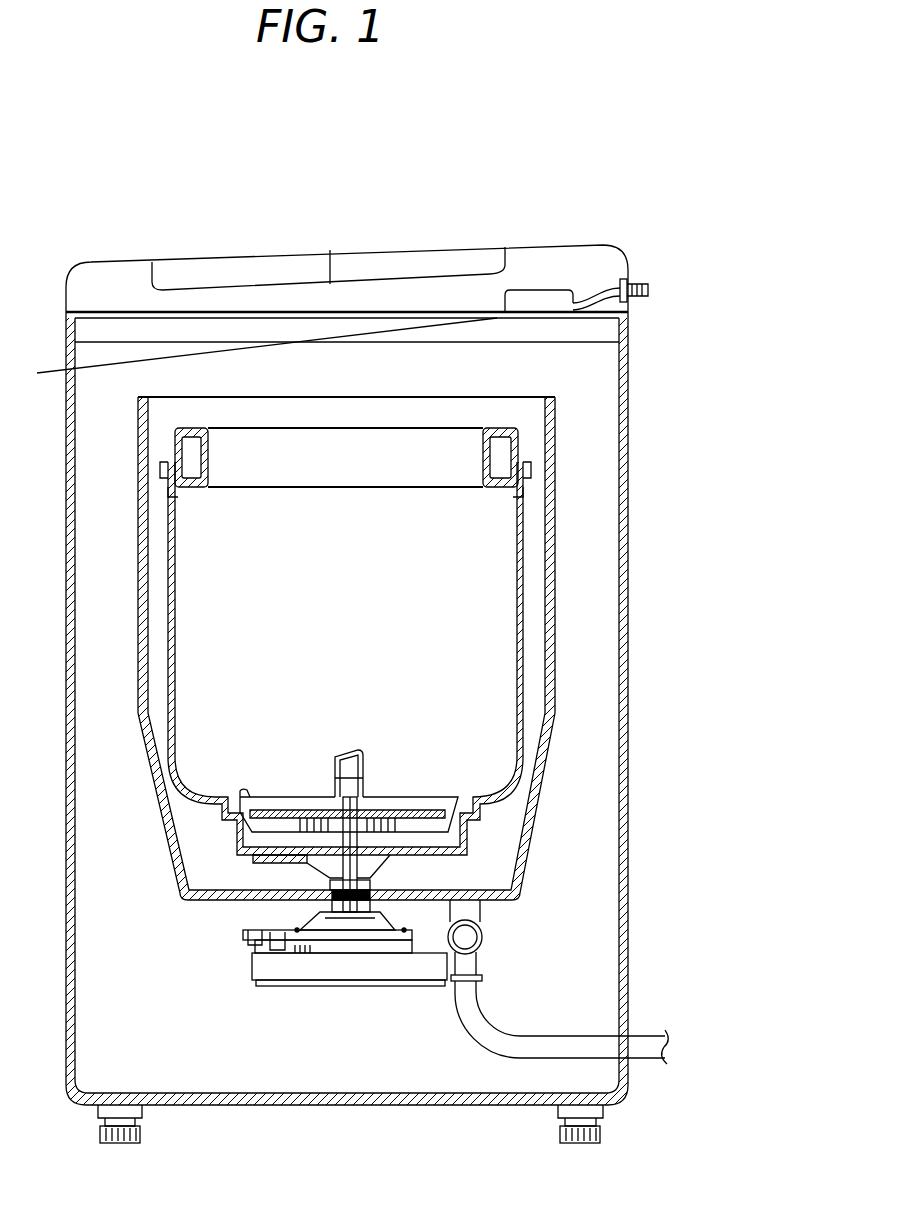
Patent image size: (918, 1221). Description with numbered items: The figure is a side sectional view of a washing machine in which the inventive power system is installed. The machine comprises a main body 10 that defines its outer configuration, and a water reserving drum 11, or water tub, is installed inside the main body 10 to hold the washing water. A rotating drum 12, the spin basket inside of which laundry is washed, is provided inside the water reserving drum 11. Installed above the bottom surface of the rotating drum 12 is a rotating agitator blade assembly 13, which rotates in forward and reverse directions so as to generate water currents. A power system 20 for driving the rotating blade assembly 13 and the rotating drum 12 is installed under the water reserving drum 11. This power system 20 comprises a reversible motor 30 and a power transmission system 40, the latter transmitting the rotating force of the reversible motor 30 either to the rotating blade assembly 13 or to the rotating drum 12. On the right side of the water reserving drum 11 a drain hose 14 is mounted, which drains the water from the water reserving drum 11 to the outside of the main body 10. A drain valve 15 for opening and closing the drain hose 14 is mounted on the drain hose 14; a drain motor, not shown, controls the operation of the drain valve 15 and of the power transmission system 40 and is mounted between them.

The main body 10 is at (628, 452).
The water reserving drum 11 is at (553, 538).
The rotating drum 12 is at (523, 660).
The rotating agitator blade assembly 13 is at (463, 805).
The drain hose 14 is at (635, 1037).
The drain valve 15 is at (482, 936).
The power system 20 is at (340, 1022).
The reversible motor 30 is at (282, 975).
The power transmission system 40 is at (368, 920).